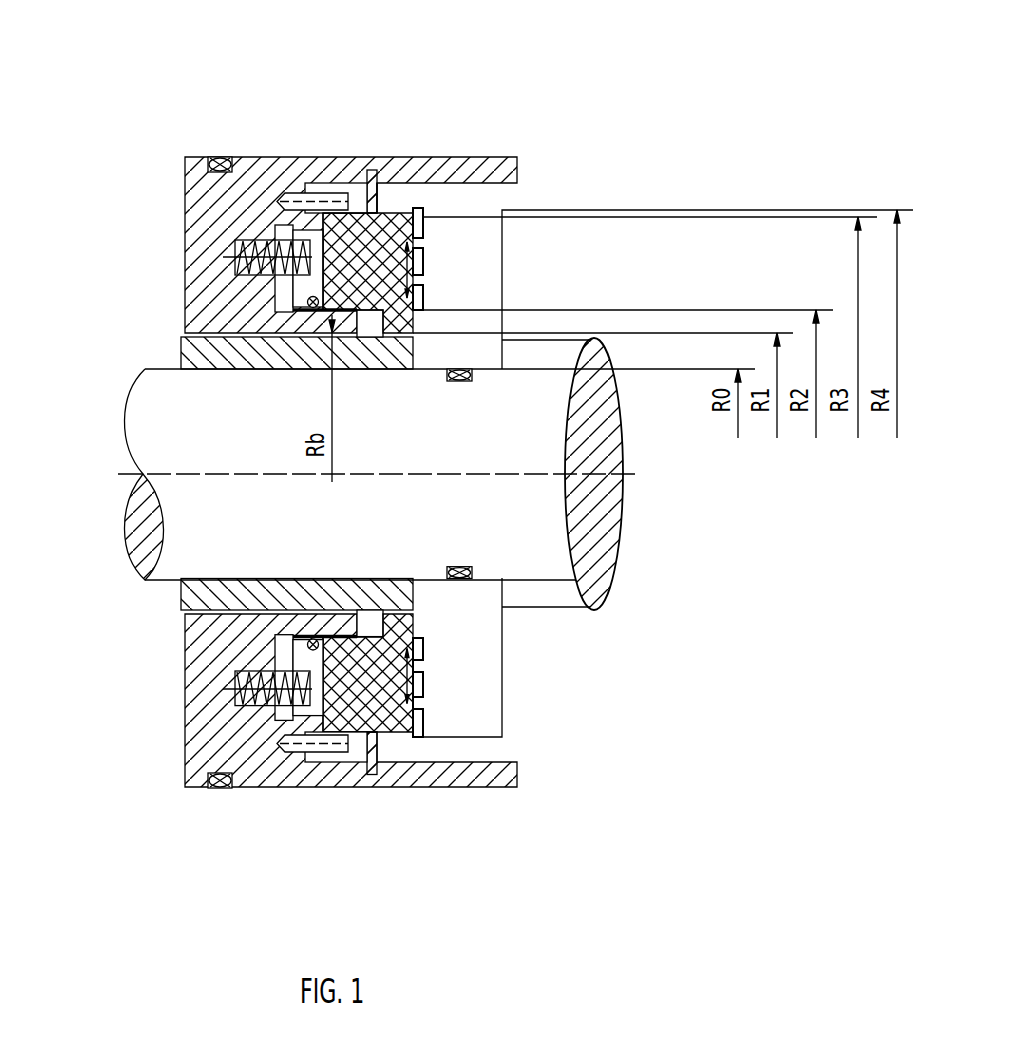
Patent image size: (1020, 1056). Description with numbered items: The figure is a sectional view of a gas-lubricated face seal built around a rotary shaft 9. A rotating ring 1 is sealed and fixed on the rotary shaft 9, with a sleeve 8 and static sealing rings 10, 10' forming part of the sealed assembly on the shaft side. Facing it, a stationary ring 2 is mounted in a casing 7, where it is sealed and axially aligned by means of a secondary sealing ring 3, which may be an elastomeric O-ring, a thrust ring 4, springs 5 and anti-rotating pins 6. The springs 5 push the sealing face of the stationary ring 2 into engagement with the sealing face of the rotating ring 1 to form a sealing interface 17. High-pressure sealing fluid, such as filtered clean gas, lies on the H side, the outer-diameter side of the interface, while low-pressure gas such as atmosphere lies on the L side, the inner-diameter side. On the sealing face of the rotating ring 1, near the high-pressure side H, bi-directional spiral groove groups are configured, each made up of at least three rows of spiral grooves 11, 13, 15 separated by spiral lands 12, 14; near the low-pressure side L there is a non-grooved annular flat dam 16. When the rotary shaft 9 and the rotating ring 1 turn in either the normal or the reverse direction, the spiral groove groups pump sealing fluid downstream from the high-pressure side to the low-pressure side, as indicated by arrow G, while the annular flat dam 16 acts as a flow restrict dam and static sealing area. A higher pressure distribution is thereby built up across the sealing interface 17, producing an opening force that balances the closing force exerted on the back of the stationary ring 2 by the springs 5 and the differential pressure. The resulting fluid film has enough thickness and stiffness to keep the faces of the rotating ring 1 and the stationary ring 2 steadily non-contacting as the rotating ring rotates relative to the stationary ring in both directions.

The rotating ring 1 is at (428, 733).
The stationary ring 2 is at (343, 752).
The secondary sealing ring 3 is at (303, 652).
The thrust ring 4 is at (183, 788).
The springs 5 is at (235, 673).
The anti-rotating pins 6 is at (313, 352).
The casing 7 is at (197, 185).
The sleeve 8 is at (296, 229).
The rotary shaft 9 is at (341, 391).
The static sealing ring 10 is at (203, 395).
The static sealing ring 10' is at (496, 293).
The spiral groove 11 is at (425, 717).
The spiral land 12 is at (418, 705).
The spiral groove 13 is at (420, 688).
The spiral land 14 is at (418, 665).
The spiral groove 15 is at (417, 647).
The annular flat dam 16 is at (417, 623).
The sealing interface 17 is at (414, 240).
The pumping direction arrow G is at (401, 474).
The high-pressure side H is at (393, 202).
The low-pressure side L is at (370, 327).